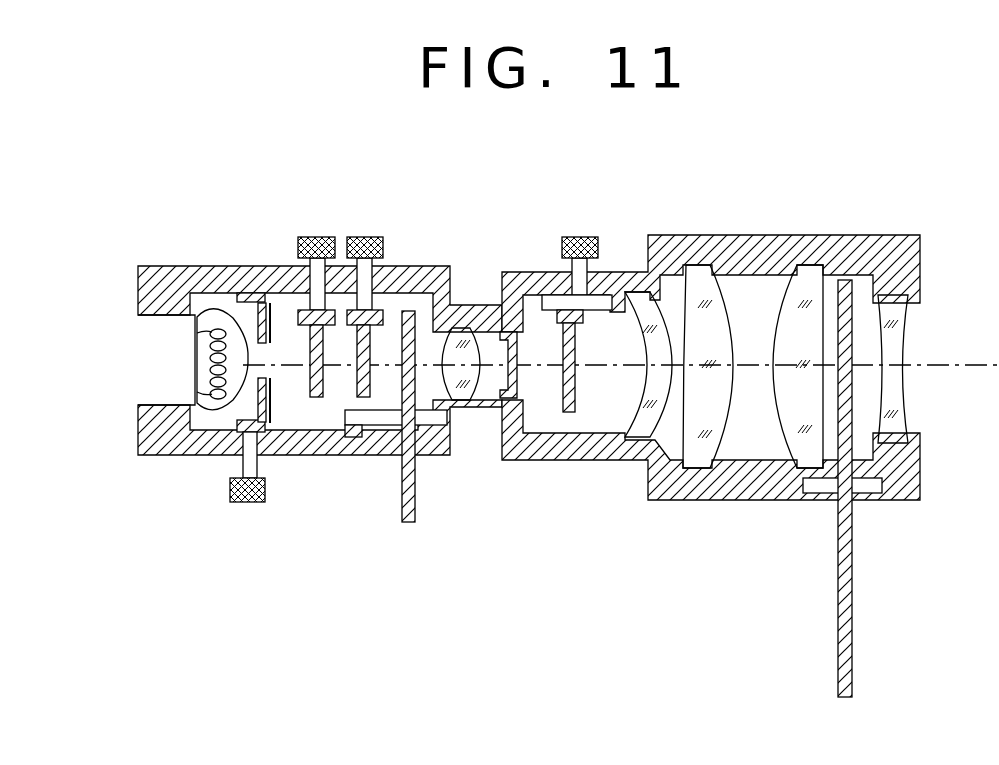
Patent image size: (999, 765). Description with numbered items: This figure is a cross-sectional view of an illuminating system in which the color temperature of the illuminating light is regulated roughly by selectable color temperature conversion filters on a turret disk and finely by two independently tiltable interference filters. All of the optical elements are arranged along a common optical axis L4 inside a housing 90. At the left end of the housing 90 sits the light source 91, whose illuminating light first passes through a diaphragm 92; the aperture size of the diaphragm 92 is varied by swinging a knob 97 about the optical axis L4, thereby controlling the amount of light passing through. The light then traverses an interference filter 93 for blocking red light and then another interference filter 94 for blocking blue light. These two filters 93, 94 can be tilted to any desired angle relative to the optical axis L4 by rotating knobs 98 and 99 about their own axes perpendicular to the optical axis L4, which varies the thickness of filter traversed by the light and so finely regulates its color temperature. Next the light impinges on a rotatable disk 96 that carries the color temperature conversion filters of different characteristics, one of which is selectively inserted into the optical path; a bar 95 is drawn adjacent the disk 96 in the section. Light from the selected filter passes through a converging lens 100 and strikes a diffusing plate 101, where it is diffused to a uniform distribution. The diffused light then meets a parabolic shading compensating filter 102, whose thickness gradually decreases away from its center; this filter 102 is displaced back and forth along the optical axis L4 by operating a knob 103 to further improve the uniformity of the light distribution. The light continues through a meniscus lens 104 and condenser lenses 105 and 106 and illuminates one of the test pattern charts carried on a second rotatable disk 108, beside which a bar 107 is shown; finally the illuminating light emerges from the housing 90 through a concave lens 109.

The housing 90 is at (758, 246).
The light source 91 is at (155, 352).
The diaphragm 92 is at (240, 407).
The interference filter 93 is at (317, 400).
The interference filter 94 is at (363, 400).
The support bar 95 is at (380, 426).
The rotatable disk 96 is at (401, 515).
The knob 97 is at (247, 503).
The knob 98 is at (312, 236).
The knob 99 is at (365, 236).
The converging lens 100 is at (462, 328).
The diffusing plate 101 is at (505, 378).
The parabolic shading compensating filter 102 is at (567, 414).
The knob 103 is at (582, 236).
The meniscus lens 104 is at (650, 308).
The condenser lens 105 is at (692, 458).
The condenser lens 106 is at (810, 280).
The support bar 107 is at (813, 490).
The rotatable disk 108 is at (853, 517).
The concave lens 109 is at (900, 330).
The optical axis L4 is at (969, 368).